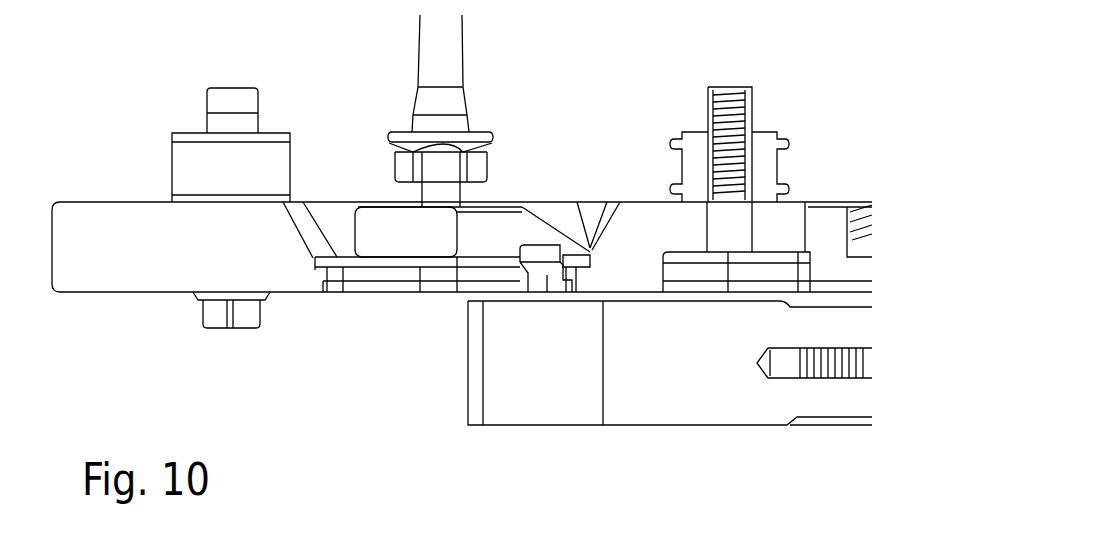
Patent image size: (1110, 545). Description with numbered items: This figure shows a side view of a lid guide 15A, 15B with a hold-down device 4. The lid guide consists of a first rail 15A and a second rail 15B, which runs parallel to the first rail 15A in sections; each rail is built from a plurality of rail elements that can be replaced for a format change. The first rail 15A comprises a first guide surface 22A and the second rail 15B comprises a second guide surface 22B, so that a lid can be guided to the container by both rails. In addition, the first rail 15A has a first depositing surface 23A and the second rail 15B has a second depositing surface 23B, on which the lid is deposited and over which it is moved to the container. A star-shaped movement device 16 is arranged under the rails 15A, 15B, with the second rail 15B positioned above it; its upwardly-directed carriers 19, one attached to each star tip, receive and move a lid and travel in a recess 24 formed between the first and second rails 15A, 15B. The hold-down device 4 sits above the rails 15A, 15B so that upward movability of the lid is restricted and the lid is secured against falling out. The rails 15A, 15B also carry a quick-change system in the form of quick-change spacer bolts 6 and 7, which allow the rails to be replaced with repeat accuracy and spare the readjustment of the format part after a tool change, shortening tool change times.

The hold-down device 4 is at (375, 243).
The quick-change spacer bolt 6 is at (203, 173).
The quick-change spacer bolt 7 is at (765, 168).
The first rail 15A is at (223, 247).
The second rail 15B is at (633, 247).
The movement device 16 is at (698, 368).
The carrier 19 is at (538, 270).
The first guide surface 22A is at (319, 268).
The second guide surface 22B is at (588, 245).
The first depositing surface 23A is at (319, 268).
The second depositing surface 23B is at (585, 255).
The recess 24 is at (422, 268).